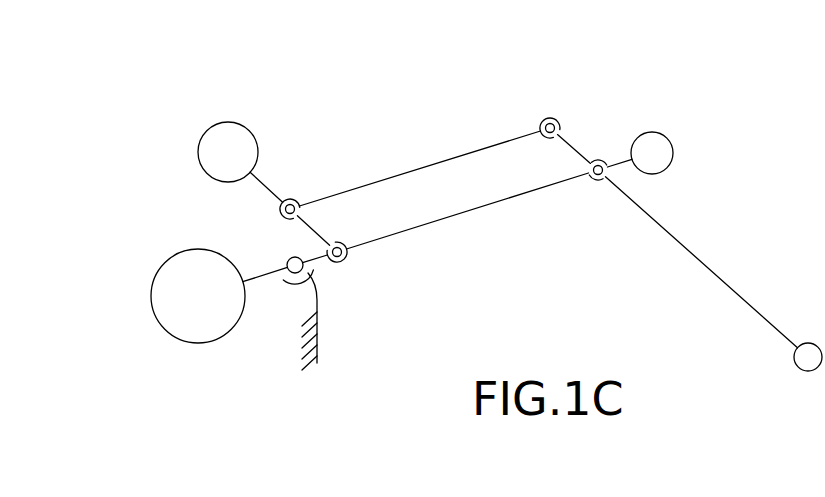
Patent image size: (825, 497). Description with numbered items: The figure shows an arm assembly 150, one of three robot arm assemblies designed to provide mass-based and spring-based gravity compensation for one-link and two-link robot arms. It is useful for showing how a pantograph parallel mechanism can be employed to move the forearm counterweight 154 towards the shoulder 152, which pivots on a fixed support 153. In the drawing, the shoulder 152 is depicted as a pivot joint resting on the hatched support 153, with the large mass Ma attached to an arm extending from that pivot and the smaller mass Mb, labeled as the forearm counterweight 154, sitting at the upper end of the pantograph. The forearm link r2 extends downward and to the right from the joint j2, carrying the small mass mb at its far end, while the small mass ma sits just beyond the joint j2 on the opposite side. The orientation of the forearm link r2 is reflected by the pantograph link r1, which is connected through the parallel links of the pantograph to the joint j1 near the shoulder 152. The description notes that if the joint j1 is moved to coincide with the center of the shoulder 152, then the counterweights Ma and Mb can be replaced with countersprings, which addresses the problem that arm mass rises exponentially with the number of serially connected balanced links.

The arm assembly 150 is at (760, 75).
The shoulder 152 is at (286, 261).
The support 153 is at (318, 300).
The forearm counterweight 154 is at (255, 138).
The counterweight Mb is at (228, 135).
The counterweight Ma is at (198, 315).
The mass ma is at (654, 135).
The mass mb is at (808, 339).
The pantograph link r1 is at (258, 187).
The forearm link r2 is at (663, 228).
The joint j1 is at (348, 260).
The joint j2 is at (592, 183).